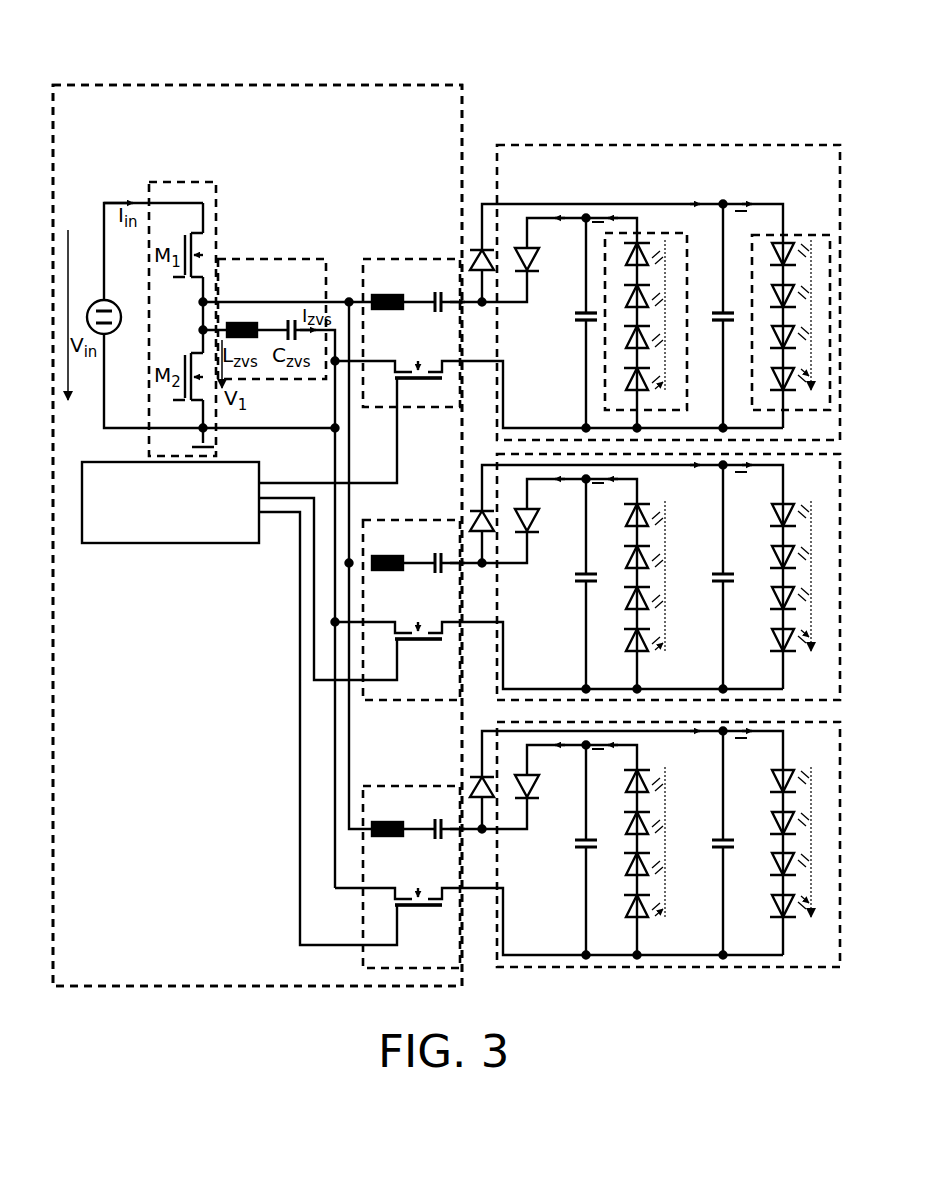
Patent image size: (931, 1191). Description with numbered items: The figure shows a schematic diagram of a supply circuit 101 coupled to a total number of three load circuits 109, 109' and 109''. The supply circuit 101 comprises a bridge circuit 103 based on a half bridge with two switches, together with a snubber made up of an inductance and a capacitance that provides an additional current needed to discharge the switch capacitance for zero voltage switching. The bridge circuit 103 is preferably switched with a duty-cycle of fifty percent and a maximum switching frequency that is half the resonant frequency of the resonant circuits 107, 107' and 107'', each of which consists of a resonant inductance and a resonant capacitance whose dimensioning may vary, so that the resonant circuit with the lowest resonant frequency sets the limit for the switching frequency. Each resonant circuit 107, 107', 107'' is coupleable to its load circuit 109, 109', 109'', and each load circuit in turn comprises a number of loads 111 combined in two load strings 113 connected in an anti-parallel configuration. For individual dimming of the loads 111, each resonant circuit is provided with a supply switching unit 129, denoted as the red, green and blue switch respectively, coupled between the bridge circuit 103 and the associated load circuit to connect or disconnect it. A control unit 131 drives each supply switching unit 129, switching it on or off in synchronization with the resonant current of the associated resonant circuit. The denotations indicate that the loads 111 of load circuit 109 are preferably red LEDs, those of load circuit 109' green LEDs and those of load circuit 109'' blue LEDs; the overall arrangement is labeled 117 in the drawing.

The lighting system / LED driver arrangement 117 is at (106, 70).
The supply circuit 101 is at (263, 85).
The bridge circuit 103 is at (181, 182).
The load string 113 is at (285, 259).
The resonant circuit 107 is at (425, 304).
The resonant circuit 107' is at (417, 581).
The resonant circuit 107'' is at (425, 848).
The load circuit 109 is at (671, 264).
The load circuit 109' is at (670, 577).
The load circuit 109'' is at (674, 844).
The load 111 is at (792, 284).
The supply switching unit 129 is at (427, 384).
The control unit 131 is at (239, 661).